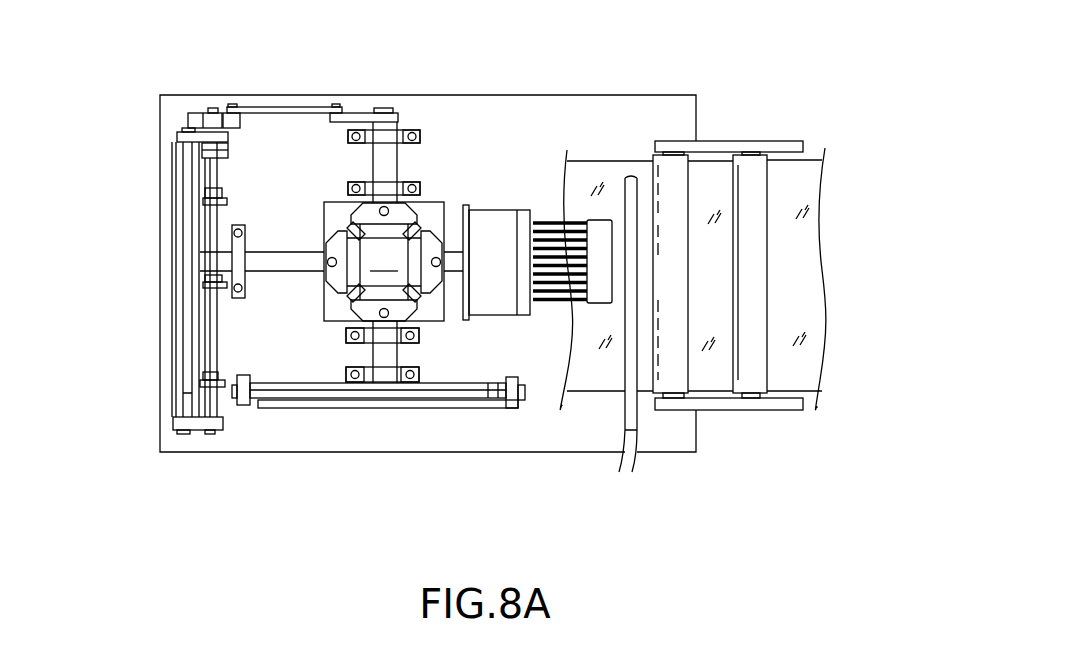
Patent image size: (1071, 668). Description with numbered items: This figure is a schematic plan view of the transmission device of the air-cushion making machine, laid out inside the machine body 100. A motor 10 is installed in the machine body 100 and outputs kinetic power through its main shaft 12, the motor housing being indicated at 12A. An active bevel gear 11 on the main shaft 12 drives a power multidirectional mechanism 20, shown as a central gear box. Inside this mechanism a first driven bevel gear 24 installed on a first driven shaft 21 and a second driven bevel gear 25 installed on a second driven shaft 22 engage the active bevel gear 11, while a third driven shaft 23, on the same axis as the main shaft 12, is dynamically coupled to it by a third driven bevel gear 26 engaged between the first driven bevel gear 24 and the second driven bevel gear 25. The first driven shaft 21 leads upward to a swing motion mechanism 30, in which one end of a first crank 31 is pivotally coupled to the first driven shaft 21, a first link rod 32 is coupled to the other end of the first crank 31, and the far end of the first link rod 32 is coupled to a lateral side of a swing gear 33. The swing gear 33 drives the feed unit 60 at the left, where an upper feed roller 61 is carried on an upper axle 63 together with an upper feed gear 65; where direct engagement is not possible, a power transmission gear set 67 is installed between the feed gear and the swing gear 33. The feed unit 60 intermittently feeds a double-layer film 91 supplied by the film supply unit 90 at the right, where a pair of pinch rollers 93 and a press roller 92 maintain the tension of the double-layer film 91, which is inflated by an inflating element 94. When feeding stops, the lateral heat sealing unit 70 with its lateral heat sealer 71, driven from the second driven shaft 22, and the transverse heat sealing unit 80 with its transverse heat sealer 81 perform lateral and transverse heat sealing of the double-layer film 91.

The motor 10 is at (548, 240).
The active bevel gear 11 is at (452, 262).
The main shaft 12 is at (508, 165).
The motor body 12A is at (494, 204).
The power multidirectional mechanism 20 is at (397, 281).
The first driven shaft 21 is at (387, 160).
The second driven shaft 22 is at (383, 362).
The third driven shaft 23 is at (288, 264).
The first driven bevel gear 24 is at (401, 227).
The second driven bevel gear 25 is at (388, 298).
The third driven bevel gear 26 is at (352, 267).
The swing motion mechanism 30 is at (310, 64).
The first crank 31 is at (349, 113).
The first link rod 32 is at (297, 107).
The swing gear 33 is at (237, 89).
The feed unit 60 is at (238, 198).
The upper feed roller 61 is at (210, 196).
The upper axle 63 is at (213, 246).
The upper feed gear 65 is at (185, 143).
The power transmission gear set 67 is at (190, 122).
The lateral heat sealing unit 70 is at (363, 445).
The lateral heat sealer 71 is at (290, 403).
The transverse heat sealing unit 80 is at (188, 270).
The transverse heat sealer 81 is at (178, 318).
The film supply unit 90 is at (700, 293).
The double-layer film 91 is at (787, 195).
The press roller 92 is at (750, 177).
The pinch rollers 93 is at (677, 183).
The inflating element 94 is at (634, 474).
The machine body 100 is at (651, 92).